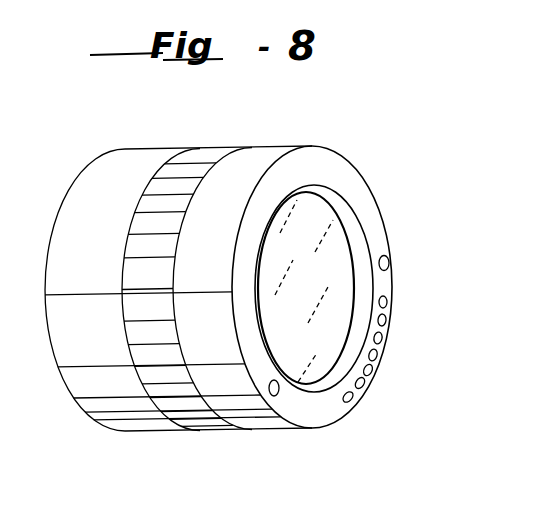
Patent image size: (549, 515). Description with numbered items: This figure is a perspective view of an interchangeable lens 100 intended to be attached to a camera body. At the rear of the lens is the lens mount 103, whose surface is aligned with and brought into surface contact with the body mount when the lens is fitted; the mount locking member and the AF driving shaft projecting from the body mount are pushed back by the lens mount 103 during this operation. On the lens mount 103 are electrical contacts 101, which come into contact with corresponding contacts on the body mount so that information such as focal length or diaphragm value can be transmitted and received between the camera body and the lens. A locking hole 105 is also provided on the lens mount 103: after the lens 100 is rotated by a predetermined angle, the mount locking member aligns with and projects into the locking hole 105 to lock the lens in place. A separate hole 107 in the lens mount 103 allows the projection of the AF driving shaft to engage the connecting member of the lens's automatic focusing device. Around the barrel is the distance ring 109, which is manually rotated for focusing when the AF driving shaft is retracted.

The interchangeable lens 100 is at (343, 152).
The electrical contacts 101 is at (399, 298).
The lens mount 103 is at (370, 208).
The locking hole 105 is at (391, 263).
The hole 107 is at (279, 394).
The distance ring 109 is at (200, 162).